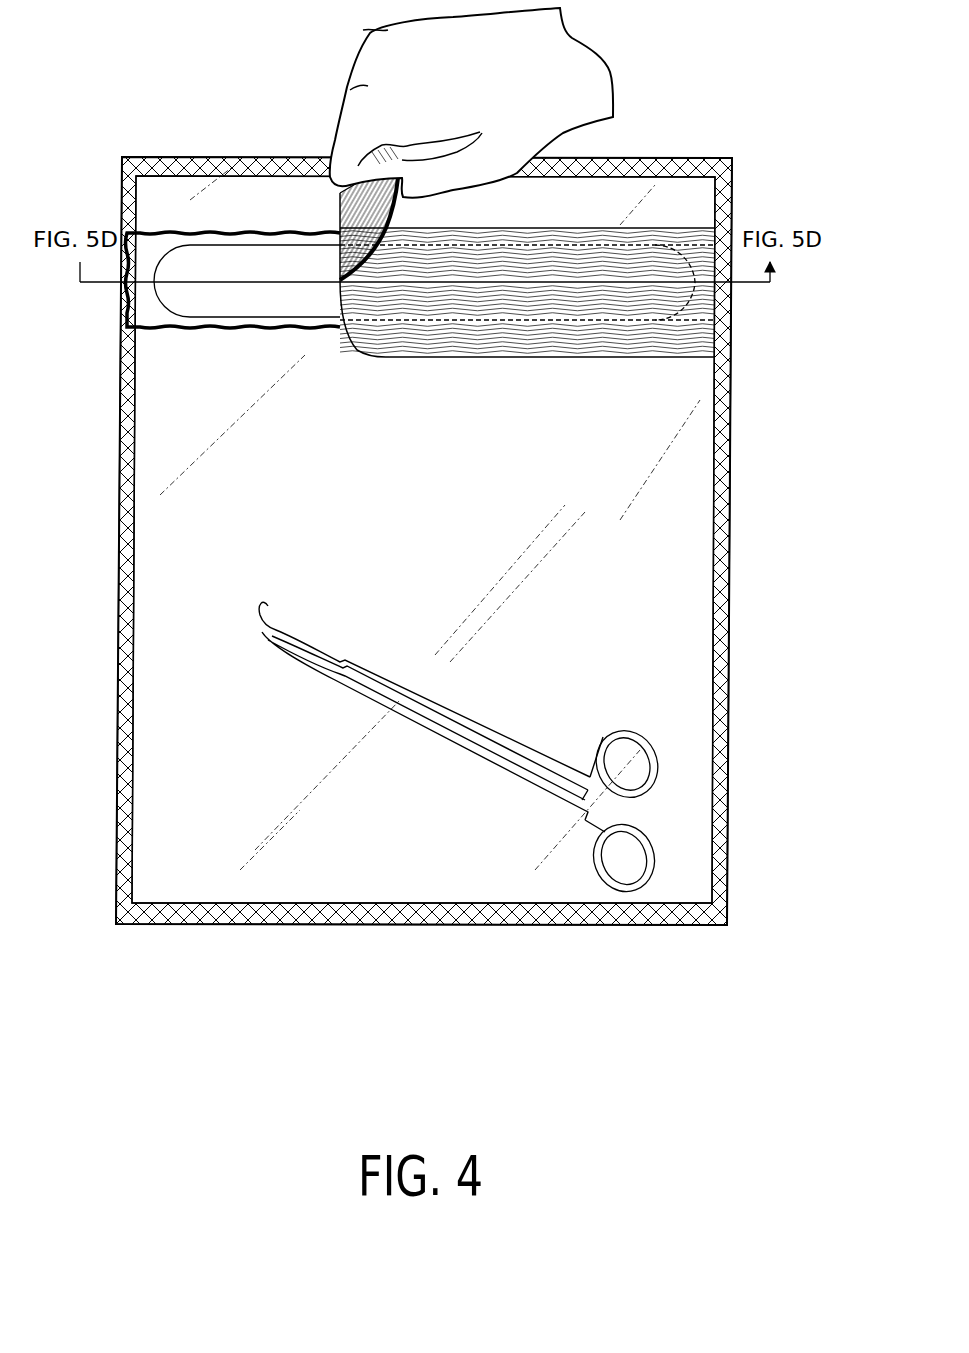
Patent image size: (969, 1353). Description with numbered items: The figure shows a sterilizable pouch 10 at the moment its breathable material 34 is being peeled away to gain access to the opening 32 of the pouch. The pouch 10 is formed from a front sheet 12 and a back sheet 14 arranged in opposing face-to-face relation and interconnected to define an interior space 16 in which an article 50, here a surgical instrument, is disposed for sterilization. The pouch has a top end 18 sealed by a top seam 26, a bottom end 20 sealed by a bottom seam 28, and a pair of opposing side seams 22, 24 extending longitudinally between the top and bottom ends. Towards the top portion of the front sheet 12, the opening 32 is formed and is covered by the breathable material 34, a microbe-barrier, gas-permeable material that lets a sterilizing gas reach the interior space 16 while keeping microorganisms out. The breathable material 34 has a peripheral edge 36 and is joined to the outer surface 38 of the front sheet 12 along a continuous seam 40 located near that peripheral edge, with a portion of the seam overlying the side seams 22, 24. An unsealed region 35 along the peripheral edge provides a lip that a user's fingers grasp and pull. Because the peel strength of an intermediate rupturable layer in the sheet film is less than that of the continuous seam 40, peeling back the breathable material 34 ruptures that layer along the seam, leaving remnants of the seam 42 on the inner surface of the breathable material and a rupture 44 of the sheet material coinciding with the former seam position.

The pouch 10 is at (836, 155).
The front sheet 12 is at (697, 380).
The back sheet 14 is at (742, 426).
The interior space 16 is at (160, 440).
The top end 18 is at (632, 130).
The bottom end 20 is at (364, 944).
The side seam 22 is at (128, 689).
The side seam 24 is at (726, 650).
The top seam 26 is at (692, 166).
The bottom seam 28 is at (458, 914).
The opening 32 is at (185, 257).
The breathable material 34 is at (362, 295).
The unsealed region 35 is at (574, 337).
The peripheral edge 36 is at (656, 368).
The outer surface 38 is at (352, 478).
The continuous seam 40 is at (707, 330).
The remnants of continuous seam 42 is at (403, 212).
The rupture of sheet material 44 is at (248, 333).
The article 50 is at (660, 775).